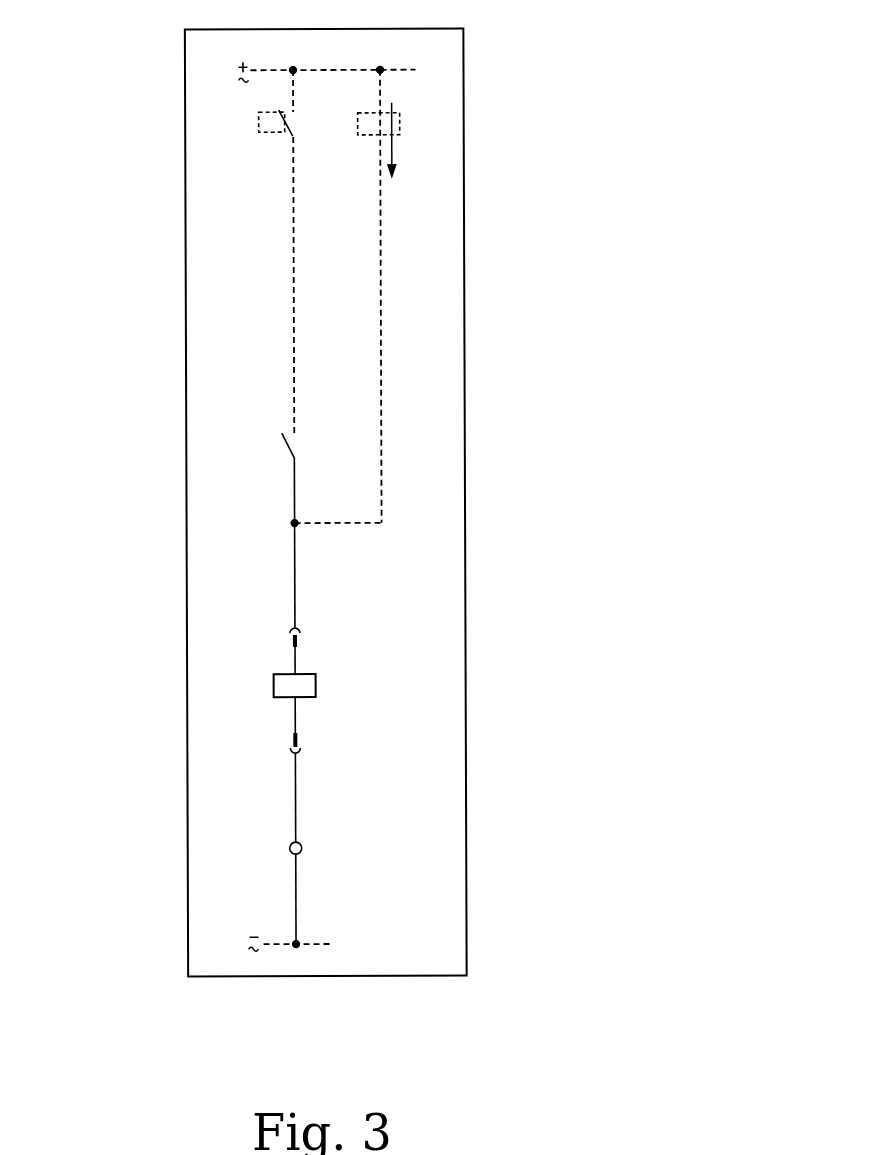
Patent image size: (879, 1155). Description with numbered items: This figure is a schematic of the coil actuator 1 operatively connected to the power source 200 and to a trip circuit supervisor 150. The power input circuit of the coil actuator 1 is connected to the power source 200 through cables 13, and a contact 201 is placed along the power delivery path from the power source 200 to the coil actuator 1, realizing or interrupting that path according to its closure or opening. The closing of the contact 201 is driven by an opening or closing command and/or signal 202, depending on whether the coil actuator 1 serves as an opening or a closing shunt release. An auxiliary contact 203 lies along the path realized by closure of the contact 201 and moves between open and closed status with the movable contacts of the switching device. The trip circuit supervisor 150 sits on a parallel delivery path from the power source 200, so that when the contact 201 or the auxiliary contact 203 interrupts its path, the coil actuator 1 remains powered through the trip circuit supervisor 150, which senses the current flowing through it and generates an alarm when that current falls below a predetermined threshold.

The coil actuator 1 is at (278, 666).
The cables 13 is at (310, 644).
The trip circuit supervisor 150 is at (416, 122).
The power source 200 is at (426, 66).
The contact 201 is at (280, 131).
The opening or closing command signal 202 is at (248, 121).
The auxiliary contact 203 is at (280, 455).